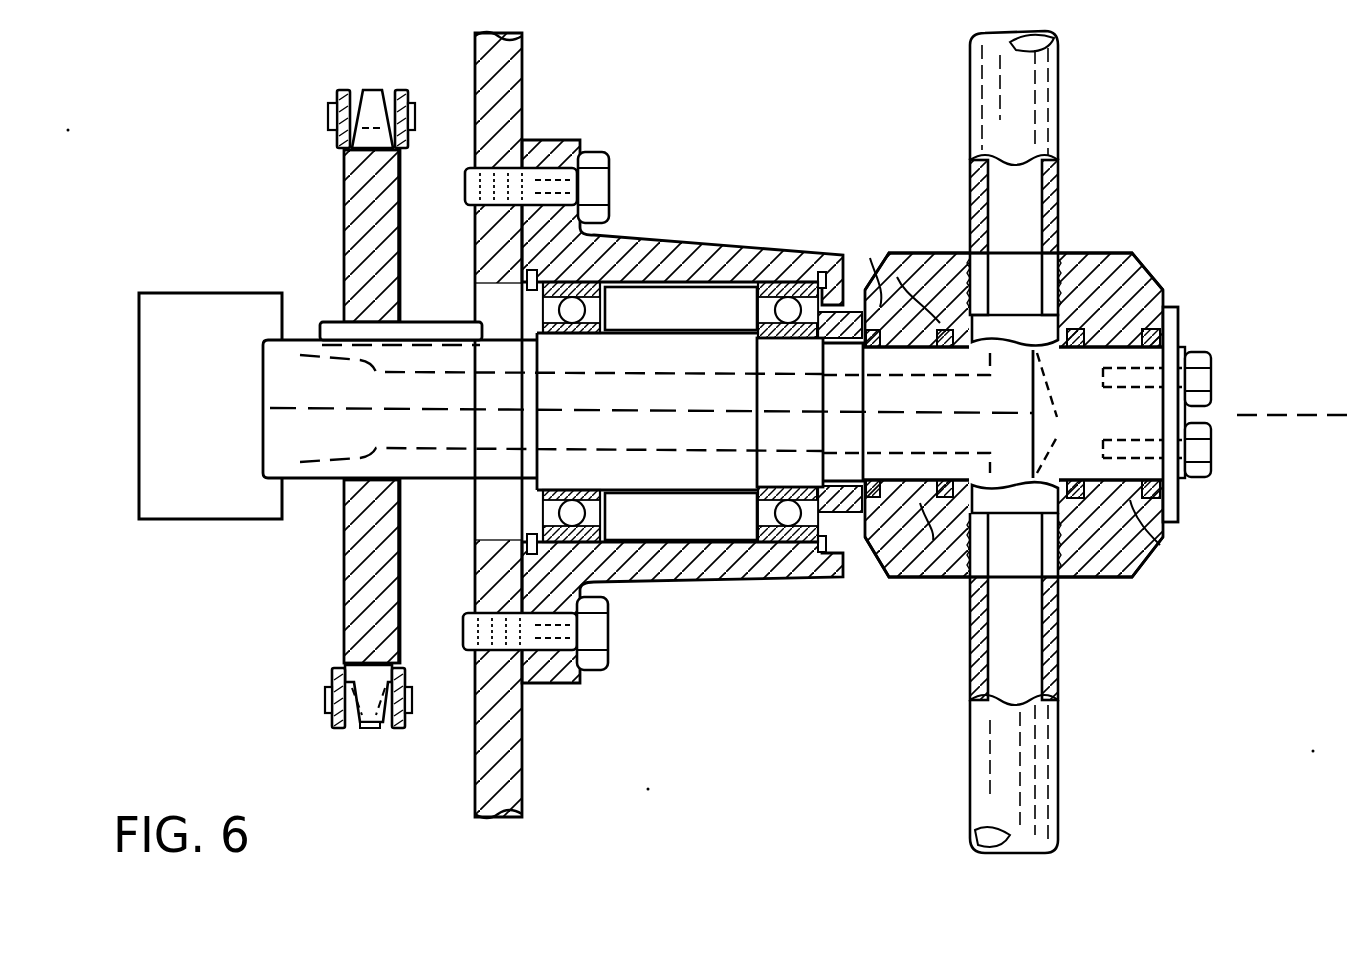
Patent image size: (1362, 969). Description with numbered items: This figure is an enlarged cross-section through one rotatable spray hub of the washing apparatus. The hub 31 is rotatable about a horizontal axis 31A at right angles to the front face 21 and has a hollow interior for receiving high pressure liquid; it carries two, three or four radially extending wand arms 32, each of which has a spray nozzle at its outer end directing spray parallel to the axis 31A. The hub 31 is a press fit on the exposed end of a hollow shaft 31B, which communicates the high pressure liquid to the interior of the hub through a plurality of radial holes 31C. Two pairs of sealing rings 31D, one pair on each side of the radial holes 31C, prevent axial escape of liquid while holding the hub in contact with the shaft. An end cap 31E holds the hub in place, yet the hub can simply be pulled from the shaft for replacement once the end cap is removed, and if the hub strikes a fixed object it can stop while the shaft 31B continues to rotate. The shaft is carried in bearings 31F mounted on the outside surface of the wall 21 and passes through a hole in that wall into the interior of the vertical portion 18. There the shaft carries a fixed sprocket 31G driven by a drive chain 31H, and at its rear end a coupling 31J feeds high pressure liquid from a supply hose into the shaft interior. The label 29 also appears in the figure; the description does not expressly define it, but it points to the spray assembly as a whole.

The vertical portion 18 is at (662, 421).
The front face 21 is at (527, 85).
The rotor drive assembly 29 is at (1222, 180).
The hub 31 is at (1019, 404).
The axis 31A is at (315, 405).
The shaft 31B is at (322, 490).
The radial holes 31C is at (988, 386).
The sealing rings 31D is at (940, 346).
The end cap 31E is at (1187, 322).
The bearings 31F is at (613, 297).
The sprocket 31G is at (340, 210).
The drive chain 31H is at (322, 103).
The coupling 31J is at (192, 282).
The wand arms 32 is at (1043, 123).